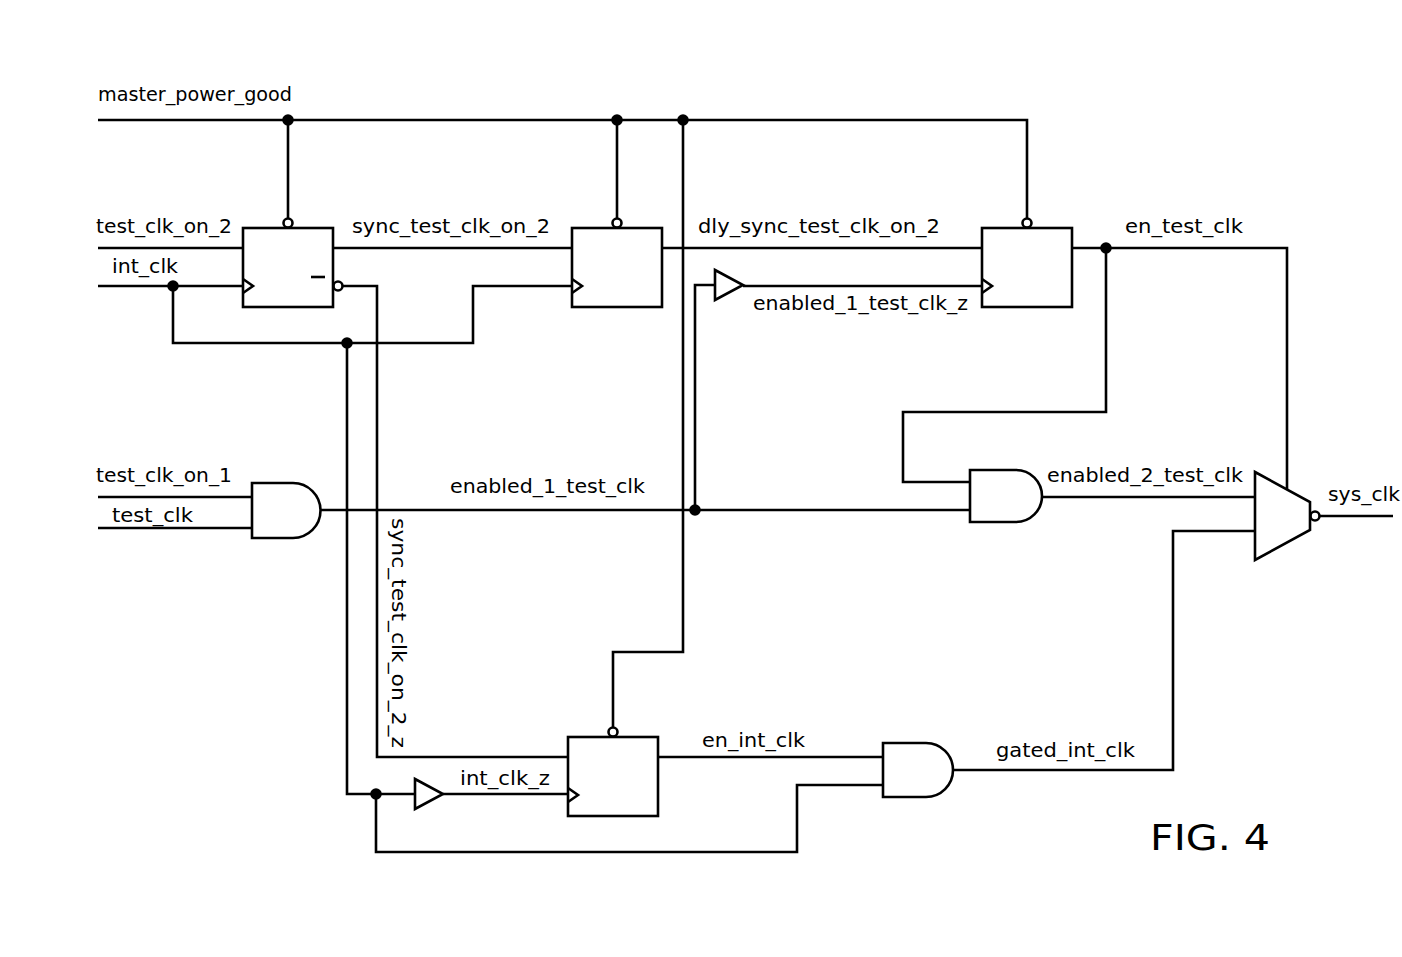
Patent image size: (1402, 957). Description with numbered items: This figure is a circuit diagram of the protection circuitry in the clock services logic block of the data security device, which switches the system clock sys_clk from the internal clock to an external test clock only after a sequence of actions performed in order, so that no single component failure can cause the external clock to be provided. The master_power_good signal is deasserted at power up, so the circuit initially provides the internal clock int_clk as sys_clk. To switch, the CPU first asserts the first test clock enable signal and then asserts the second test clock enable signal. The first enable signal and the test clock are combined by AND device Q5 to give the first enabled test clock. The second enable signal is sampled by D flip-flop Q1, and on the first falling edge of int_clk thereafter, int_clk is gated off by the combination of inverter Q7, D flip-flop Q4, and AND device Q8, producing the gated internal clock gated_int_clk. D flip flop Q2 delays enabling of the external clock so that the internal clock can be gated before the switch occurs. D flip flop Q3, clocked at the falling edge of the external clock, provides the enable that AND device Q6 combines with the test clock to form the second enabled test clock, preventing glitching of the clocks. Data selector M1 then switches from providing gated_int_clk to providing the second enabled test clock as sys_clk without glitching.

The D flip-flop Q1 is at (293, 263).
The D flip flop Q2 is at (617, 263).
The D flip flop Q3 is at (1027, 263).
The D flip-flop Q4 is at (613, 772).
The AND device Q5 is at (286, 510).
The AND device Q6 is at (1006, 496).
The inverter Q7 is at (427, 803).
The AND device Q8 is at (918, 770).
The data selector M1 is at (1287, 516).